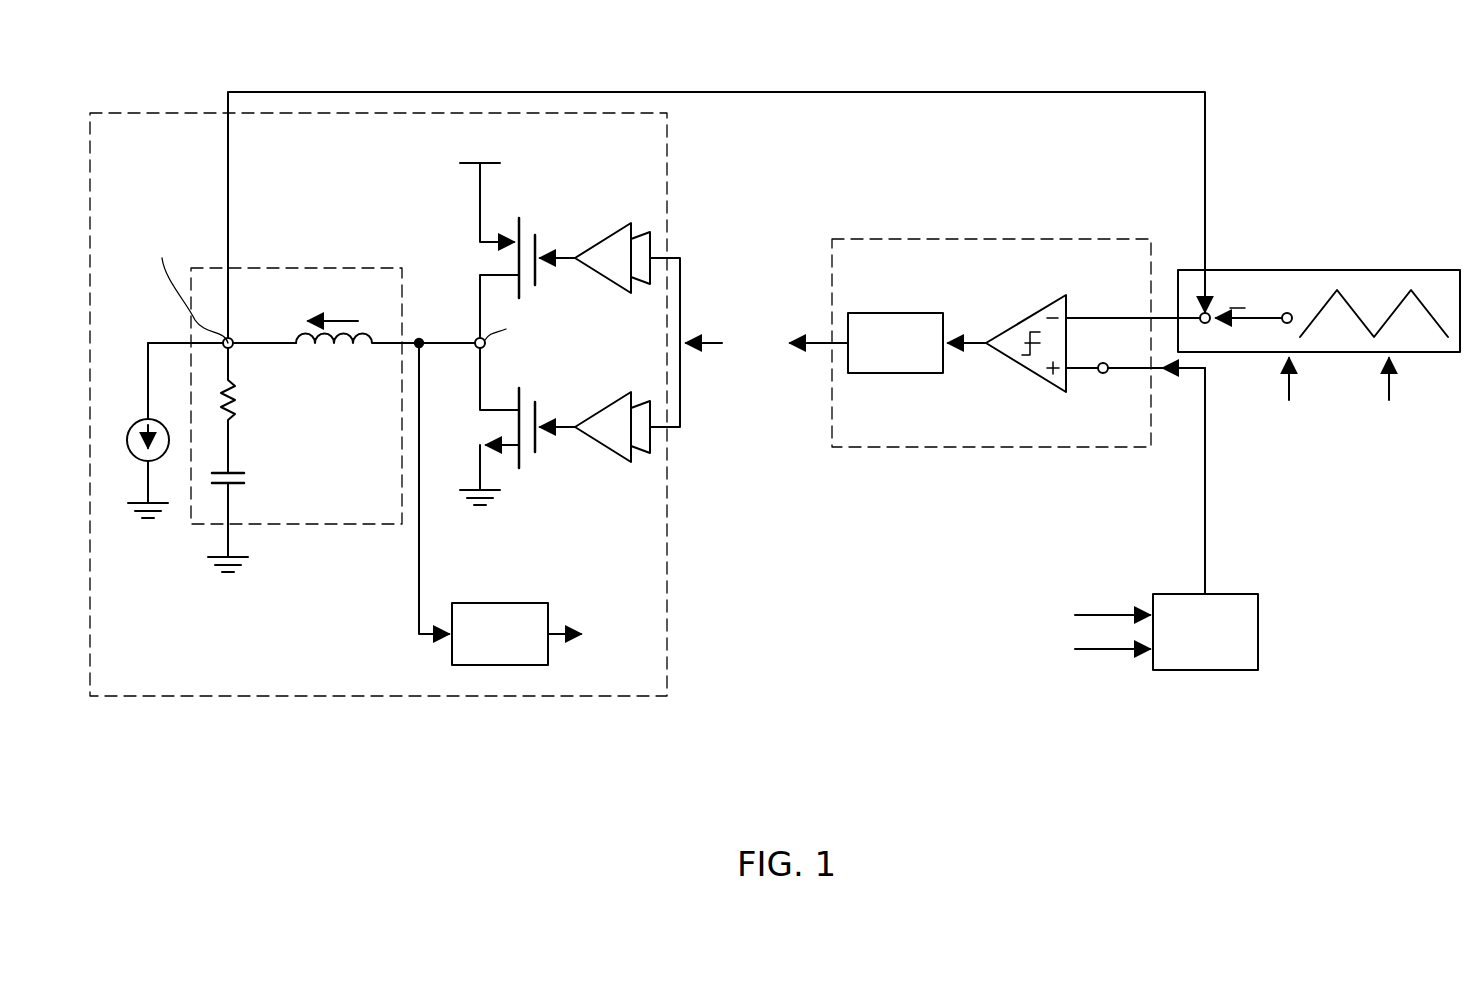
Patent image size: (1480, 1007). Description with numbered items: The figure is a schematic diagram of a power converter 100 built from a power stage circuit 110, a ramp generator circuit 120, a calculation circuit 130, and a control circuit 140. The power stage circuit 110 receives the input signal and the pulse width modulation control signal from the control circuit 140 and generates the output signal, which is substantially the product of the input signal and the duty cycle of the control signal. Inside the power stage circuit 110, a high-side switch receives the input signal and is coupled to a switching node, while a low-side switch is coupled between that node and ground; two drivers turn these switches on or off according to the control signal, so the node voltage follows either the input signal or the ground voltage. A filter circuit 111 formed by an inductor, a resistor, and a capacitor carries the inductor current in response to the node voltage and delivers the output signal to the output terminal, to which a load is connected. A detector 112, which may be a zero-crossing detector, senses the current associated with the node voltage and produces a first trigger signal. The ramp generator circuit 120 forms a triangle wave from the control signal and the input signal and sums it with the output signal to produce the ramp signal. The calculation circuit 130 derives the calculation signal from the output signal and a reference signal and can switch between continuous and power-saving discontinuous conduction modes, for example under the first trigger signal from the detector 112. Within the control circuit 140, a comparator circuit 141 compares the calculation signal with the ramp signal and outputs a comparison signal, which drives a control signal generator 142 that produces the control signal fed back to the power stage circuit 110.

The power converter 100 is at (143, 51).
The power stage circuit 110 is at (342, 698).
The filter circuit 111 is at (305, 266).
The detector 112 is at (522, 648).
The ramp generator circuit 120 is at (1355, 270).
The calculation circuit 130 is at (1212, 672).
The control circuit 140 is at (930, 449).
The comparator circuit 141 is at (1043, 393).
The control signal generator 142 is at (917, 357).